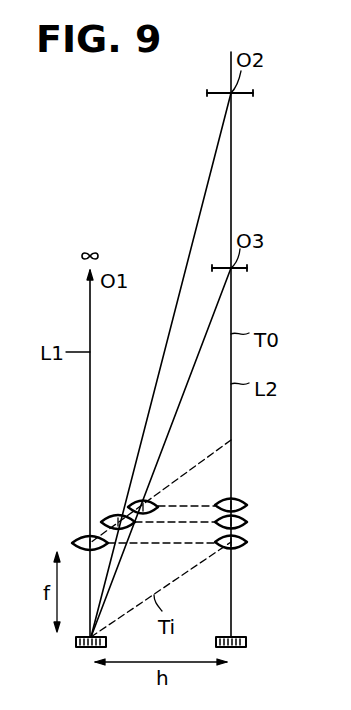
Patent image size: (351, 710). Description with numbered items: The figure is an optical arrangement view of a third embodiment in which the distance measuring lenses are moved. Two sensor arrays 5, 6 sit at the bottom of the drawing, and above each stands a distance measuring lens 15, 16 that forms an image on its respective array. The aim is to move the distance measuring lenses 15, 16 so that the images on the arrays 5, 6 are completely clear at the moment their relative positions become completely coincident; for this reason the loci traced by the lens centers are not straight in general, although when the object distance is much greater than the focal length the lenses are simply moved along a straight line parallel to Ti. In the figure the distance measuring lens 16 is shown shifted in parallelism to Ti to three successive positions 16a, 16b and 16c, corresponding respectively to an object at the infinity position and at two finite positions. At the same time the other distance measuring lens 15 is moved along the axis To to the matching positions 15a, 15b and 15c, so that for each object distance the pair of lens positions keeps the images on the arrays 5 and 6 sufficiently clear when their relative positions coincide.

The array 5 is at (233, 647).
The array 6 is at (82, 648).
The distance measuring lens 15 is at (234, 553).
The position of distance measuring lens 15a is at (231, 542).
The position of distance measuring lens 15b is at (231, 522).
The position of distance measuring lens 15c is at (231, 505).
The distance measuring lens 16 is at (76, 556).
The position of distance measuring lens 16a is at (88, 543).
The position of distance measuring lens 16b is at (115, 521).
The position of distance measuring lens 16c is at (141, 506).